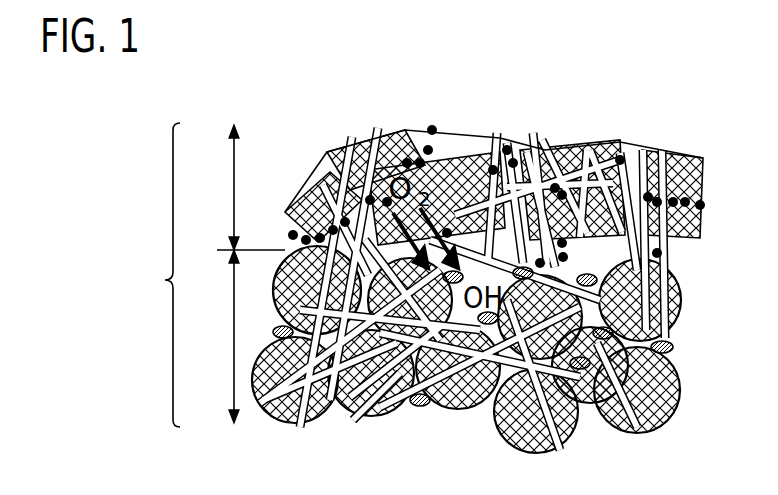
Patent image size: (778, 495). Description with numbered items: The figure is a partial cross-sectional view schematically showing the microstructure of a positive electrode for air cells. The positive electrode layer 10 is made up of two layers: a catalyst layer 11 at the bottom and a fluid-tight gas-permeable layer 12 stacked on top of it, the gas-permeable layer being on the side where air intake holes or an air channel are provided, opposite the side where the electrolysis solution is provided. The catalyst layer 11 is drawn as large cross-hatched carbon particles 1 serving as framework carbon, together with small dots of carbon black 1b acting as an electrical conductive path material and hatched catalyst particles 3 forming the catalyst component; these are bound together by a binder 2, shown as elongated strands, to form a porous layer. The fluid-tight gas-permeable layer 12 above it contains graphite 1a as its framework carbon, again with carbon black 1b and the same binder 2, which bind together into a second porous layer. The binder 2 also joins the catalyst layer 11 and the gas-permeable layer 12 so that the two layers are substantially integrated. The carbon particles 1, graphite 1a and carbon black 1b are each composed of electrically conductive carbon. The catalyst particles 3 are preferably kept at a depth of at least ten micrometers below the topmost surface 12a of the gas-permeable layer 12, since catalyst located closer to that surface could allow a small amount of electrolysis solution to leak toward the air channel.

The carbon particles 1 is at (672, 300).
The graphite 1a is at (463, 137).
The carbon black 1b is at (432, 128).
The binder 2 is at (370, 127).
The catalyst particles 3 is at (672, 345).
The positive electrode layer 10 is at (151, 275).
The catalyst layer 11 is at (219, 336).
The fluid-tight gas-permeable layer 12 is at (242, 187).
The topmost surface 12a is at (380, 130).